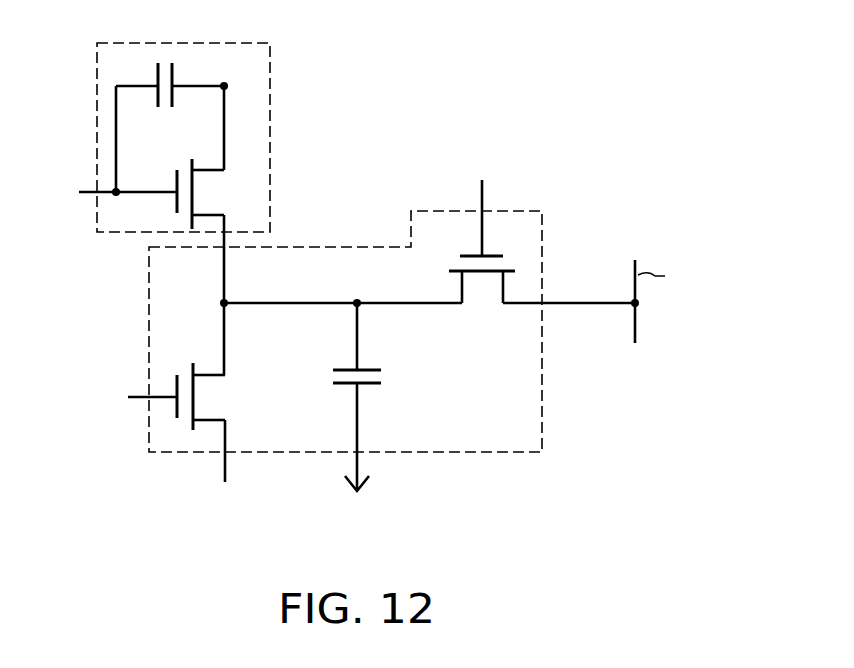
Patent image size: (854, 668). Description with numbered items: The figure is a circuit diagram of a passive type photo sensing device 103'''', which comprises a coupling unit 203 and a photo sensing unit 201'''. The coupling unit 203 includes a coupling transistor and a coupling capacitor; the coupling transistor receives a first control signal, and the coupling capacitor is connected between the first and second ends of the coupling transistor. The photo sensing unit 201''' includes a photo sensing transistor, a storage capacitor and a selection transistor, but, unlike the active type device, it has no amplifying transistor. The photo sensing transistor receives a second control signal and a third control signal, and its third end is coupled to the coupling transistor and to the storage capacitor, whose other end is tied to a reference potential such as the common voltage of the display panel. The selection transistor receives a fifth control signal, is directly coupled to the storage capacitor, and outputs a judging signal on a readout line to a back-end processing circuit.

The passive type photo sensing device 103'''' is at (371, 267).
The coupling unit 203 is at (243, 43).
The photo sensing unit 201''' is at (381, 338).